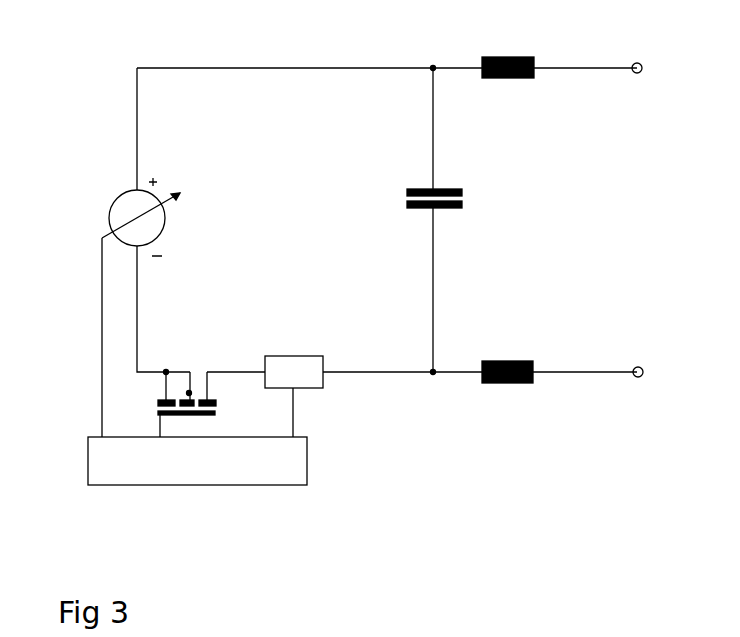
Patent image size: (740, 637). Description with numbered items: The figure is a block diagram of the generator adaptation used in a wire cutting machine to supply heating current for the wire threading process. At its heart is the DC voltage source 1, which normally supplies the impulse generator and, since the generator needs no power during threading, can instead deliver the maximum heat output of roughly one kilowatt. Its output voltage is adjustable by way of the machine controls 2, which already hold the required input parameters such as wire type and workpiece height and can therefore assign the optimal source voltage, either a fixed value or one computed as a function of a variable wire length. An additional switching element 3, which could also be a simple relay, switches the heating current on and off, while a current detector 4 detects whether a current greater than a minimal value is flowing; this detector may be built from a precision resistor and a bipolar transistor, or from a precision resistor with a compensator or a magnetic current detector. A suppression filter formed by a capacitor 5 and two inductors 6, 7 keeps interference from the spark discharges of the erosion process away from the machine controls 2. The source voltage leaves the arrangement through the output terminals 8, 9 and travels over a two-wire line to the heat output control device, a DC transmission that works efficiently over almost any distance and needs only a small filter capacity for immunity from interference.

The DC voltage source 1 is at (125, 201).
The machine controls 2 is at (135, 472).
The switching element 3 is at (162, 387).
The current detector 4 is at (320, 388).
The capacitor 5 is at (423, 210).
The inductor 6 is at (483, 56).
The inductor 7 is at (513, 383).
The output terminal 8 is at (636, 378).
The output terminal 9 is at (633, 63).